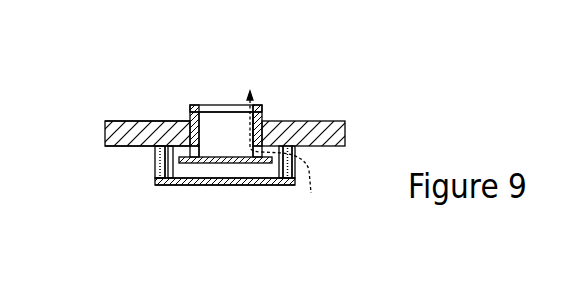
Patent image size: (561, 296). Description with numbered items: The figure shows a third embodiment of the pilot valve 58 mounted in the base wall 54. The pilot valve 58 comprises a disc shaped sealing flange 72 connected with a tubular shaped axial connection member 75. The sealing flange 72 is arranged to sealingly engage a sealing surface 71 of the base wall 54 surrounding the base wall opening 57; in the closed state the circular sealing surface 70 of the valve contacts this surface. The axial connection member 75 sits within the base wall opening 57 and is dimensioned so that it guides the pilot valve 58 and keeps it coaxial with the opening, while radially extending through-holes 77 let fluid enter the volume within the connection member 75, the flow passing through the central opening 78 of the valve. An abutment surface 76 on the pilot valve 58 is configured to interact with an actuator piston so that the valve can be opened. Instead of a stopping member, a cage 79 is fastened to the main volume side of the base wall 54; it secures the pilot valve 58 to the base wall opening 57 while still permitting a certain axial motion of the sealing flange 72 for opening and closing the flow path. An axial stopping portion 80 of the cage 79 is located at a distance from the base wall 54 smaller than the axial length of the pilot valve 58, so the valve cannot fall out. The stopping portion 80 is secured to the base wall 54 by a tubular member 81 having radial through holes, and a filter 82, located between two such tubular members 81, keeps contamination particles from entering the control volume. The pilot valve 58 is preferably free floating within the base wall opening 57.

The base wall 54 is at (133, 121).
The circular sealing surface 70 is at (147, 121).
The abutment surface 76 is at (222, 93).
The central opening 78 is at (208, 105).
The base wall opening 57 is at (235, 130).
The axial connection member 75 is at (264, 121).
The pilot valve 58 is at (229, 168).
The cage 79 is at (248, 194).
The axial stopping portion 80 is at (268, 185).
The sealing flange 72 is at (172, 121).
The tubular member 81 is at (154, 156).
The filter 82 is at (154, 165).
The sealing surface 71 is at (154, 173).
The radially extending through-holes 77 is at (287, 147).